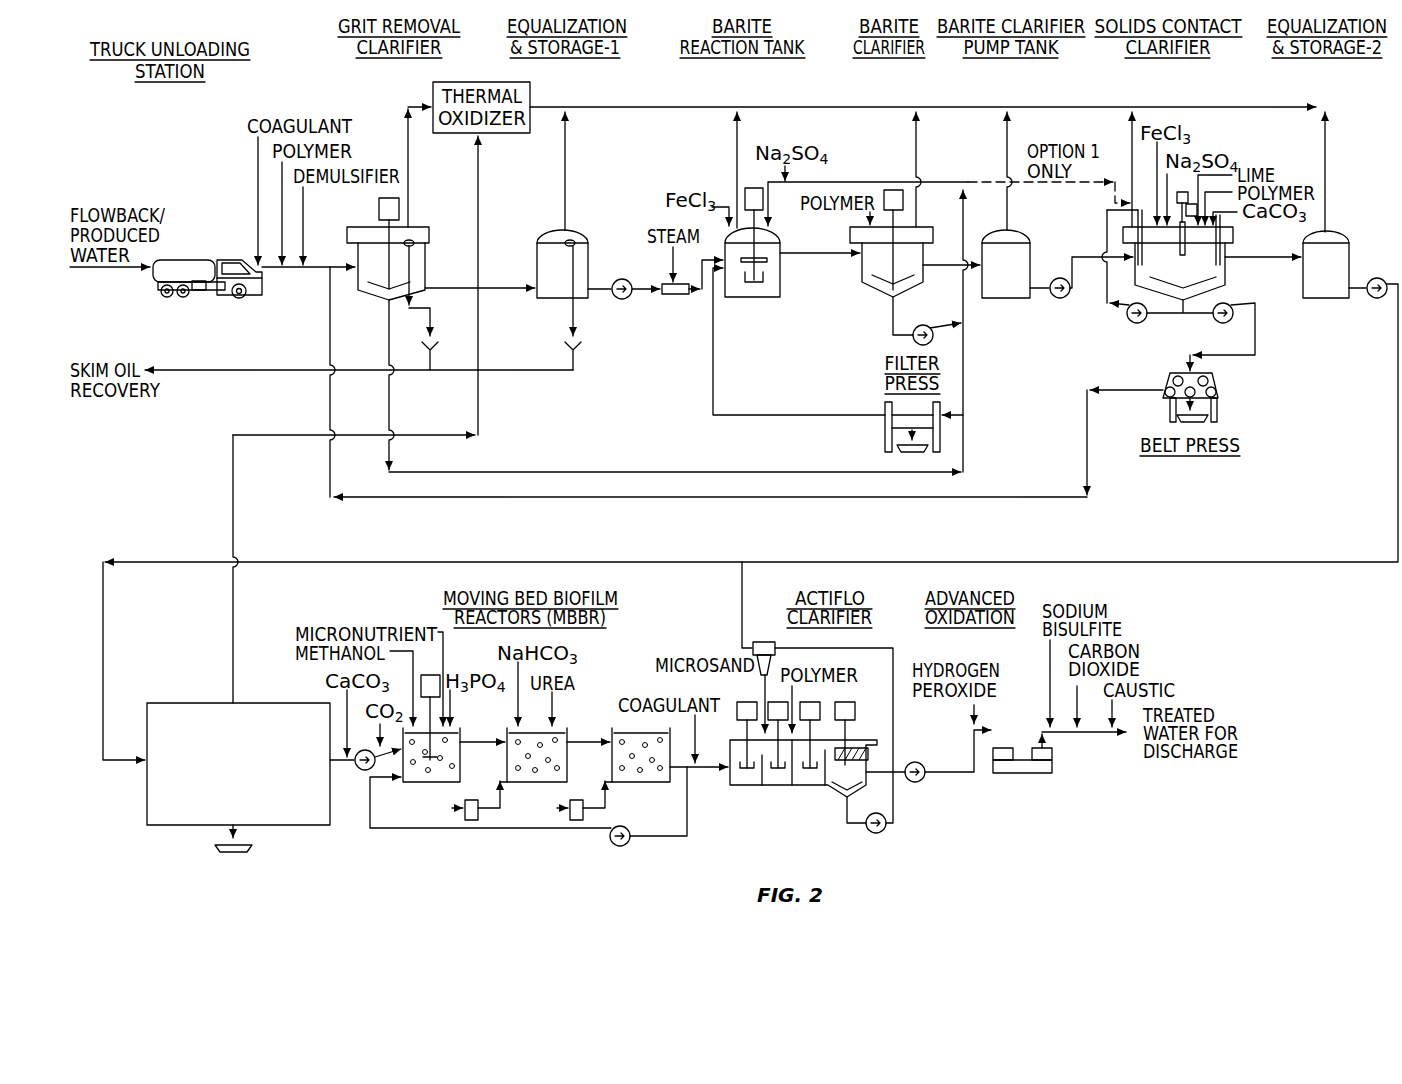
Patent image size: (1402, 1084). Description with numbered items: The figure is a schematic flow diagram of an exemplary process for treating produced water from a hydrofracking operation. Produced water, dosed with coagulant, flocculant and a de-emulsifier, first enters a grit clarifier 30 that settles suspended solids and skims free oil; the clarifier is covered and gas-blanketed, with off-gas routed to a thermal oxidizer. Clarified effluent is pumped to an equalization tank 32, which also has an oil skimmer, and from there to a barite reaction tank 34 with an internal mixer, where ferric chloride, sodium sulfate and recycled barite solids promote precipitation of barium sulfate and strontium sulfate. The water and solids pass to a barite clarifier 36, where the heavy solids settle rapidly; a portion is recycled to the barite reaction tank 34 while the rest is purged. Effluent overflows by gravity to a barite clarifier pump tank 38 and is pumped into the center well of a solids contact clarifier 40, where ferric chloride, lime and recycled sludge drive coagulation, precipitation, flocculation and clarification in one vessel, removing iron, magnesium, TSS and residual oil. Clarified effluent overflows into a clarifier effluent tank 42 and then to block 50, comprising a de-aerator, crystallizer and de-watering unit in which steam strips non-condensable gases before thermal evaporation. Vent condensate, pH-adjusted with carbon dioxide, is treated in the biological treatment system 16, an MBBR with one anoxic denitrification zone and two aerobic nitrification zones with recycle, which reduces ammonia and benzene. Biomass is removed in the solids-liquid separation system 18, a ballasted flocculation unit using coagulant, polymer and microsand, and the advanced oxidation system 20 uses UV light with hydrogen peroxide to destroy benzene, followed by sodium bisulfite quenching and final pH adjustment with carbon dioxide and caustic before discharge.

The grit clarifier 30 is at (358, 277).
The equalization tank 32 is at (568, 231).
The barite reaction tank 34 is at (755, 297).
The barite clarifier 36 is at (862, 278).
The barite clarifier pump tank 38 is at (995, 298).
The solids contact clarifier 40 is at (1225, 275).
The clarifier effluent tank 42 is at (1335, 233).
The block including de-aerator, crystallizer and de-watering unit 50 is at (285, 826).
The biological treatment system 16 is at (535, 840).
The solids-liquid separation system 18 is at (788, 822).
The advanced oxidation system 20 is at (1035, 791).